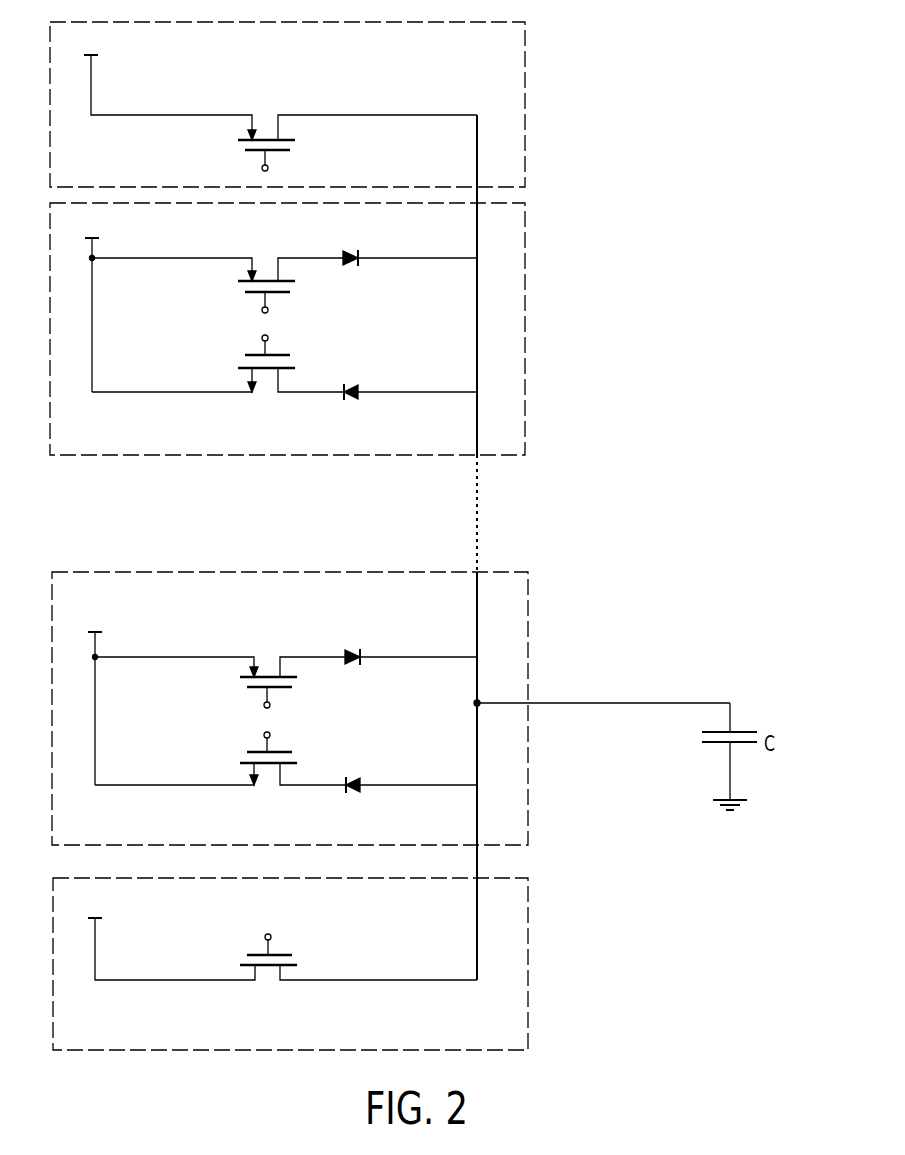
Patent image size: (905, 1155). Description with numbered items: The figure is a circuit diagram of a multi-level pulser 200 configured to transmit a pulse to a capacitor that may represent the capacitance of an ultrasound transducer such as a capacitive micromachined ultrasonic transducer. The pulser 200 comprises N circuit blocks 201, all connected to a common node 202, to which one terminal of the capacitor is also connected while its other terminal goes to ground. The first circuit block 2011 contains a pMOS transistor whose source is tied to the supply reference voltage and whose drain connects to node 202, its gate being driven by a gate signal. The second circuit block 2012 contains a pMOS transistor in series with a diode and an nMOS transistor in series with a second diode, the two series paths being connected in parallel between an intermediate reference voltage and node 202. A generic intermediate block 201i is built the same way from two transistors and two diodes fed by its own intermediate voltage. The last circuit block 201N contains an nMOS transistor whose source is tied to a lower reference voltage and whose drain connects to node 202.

The multi-level pulser 200 is at (668, 97).
The circuit blocks 201 is at (327, 536).
The first circuit block 2011 is at (528, 120).
The second circuit block 2012 is at (528, 290).
The i-th circuit block 201i is at (530, 591).
The N-th circuit block 201N is at (530, 932).
The node 202 is at (480, 700).